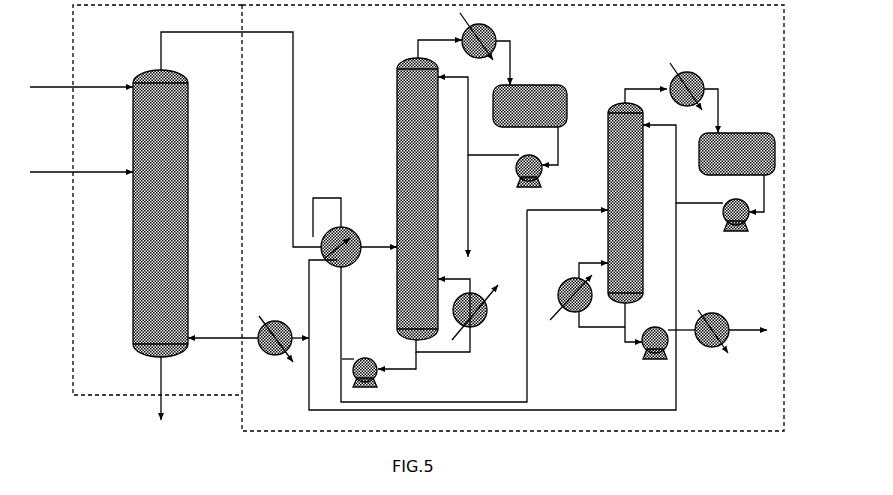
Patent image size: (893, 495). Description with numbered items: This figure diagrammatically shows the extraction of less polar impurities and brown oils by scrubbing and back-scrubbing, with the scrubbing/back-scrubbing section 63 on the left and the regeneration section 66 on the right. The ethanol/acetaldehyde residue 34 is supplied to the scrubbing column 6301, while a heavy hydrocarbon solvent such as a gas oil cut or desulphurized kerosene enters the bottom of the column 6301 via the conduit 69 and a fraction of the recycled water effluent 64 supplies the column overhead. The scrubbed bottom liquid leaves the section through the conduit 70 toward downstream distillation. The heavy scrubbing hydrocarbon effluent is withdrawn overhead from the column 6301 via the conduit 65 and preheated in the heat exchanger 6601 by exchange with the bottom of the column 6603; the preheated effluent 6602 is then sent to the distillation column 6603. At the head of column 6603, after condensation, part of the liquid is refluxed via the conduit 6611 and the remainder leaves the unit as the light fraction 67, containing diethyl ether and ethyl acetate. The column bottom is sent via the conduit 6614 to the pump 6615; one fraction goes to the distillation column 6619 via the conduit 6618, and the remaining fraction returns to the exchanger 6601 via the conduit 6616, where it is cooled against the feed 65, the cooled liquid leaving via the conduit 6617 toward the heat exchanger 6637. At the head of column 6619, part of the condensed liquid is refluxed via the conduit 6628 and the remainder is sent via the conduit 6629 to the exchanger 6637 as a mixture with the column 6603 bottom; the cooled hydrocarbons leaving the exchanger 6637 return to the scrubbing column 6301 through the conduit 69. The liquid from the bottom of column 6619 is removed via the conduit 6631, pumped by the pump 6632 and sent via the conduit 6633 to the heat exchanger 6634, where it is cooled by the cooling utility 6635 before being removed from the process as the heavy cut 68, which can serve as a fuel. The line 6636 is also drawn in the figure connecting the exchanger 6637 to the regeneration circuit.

The scrubbing/back-scrubbing section 63 is at (157, 200).
The regeneration section 66 is at (513, 218).
The recycled water 64 is at (81, 78).
The ethanol/acetaldehyde residue 34 is at (81, 161).
The scrubbing column 6301 is at (160, 213).
The conduit 65 is at (241, 139).
The conduit 6617 is at (331, 209).
The heat exchanger 6601 is at (353, 240).
The preheated heavy scrubbing hydrocarbon effluent 6602 is at (379, 260).
The conduit 6616 is at (433, 306).
The pump 6615 is at (360, 366).
The conduit 6614 is at (438, 333).
The distillation column 6603 is at (417, 199).
The conduit 6611 is at (492, 100).
The light fraction 67 is at (481, 206).
The conduit 6618 is at (567, 219).
The distillation column 6619 is at (624, 203).
The conduit 6628 is at (700, 147).
The conduit 6629 is at (492, 306).
The conduit 6631 is at (596, 314).
The pump 6632 is at (654, 354).
The conduit 6633 is at (675, 322).
The heat exchanger 6634 is at (711, 321).
The cooling utility 6635 is at (487, 338).
The heavy cut 68 is at (749, 343).
The heat exchanger 6637 is at (272, 353).
The conduit 69 is at (223, 330).
The transfer line 6636 is at (298, 334).
The conduit 70 is at (177, 390).